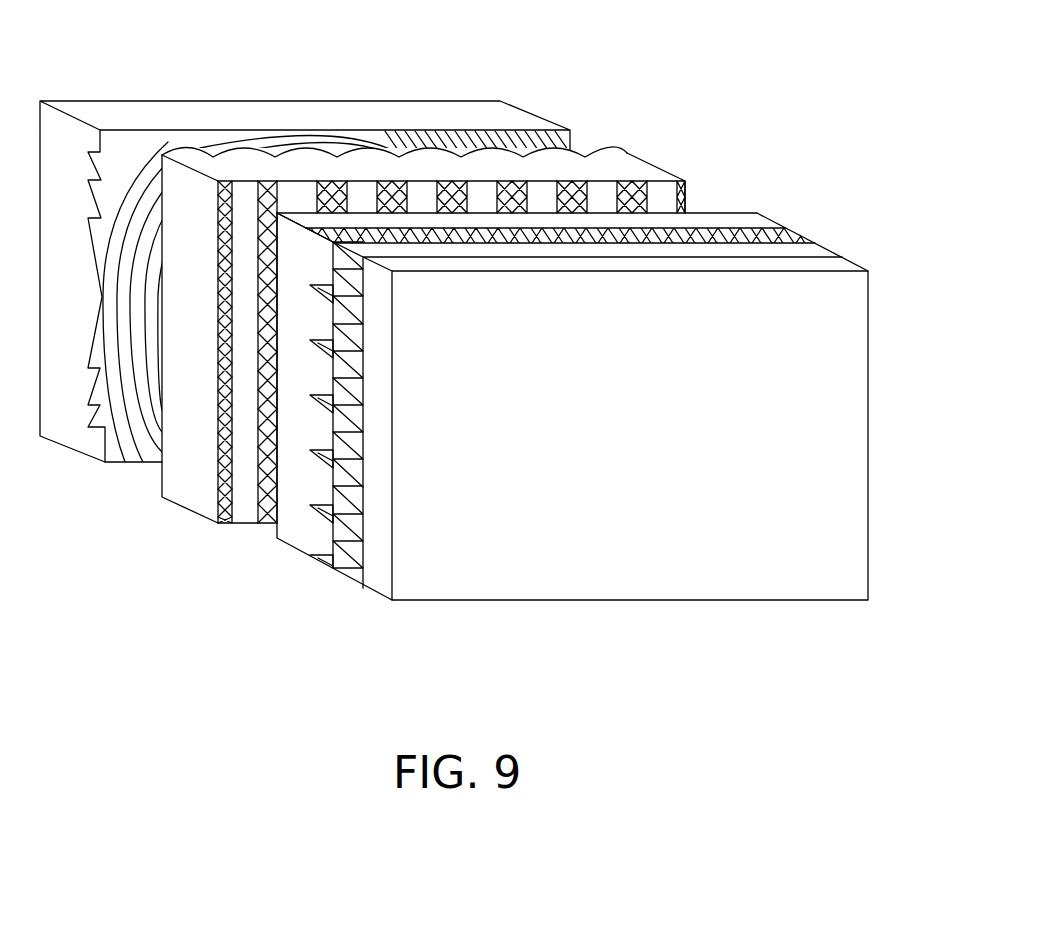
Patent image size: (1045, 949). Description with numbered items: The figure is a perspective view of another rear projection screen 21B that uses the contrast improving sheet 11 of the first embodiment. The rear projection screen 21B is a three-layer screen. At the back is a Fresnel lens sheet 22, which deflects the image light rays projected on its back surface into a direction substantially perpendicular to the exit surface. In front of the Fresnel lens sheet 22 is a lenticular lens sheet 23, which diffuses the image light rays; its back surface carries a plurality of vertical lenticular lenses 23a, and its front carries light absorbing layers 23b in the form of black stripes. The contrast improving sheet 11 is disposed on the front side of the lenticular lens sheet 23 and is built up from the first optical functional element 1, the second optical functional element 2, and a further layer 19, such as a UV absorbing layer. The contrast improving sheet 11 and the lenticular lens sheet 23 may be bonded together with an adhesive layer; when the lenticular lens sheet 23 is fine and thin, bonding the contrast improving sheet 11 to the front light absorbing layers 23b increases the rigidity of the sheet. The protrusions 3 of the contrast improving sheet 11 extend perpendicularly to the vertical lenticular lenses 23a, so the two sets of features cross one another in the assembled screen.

The rear projection screen 21B is at (928, 34).
The Fresnel lens sheet 22 is at (518, 116).
The lenticular lens sheet 23 is at (655, 167).
The vertical lenticular lenses 23a is at (590, 147).
The front light absorbing layers 23b is at (627, 187).
The protrusions 3 is at (320, 528).
The contrast improving sheet 11 is at (933, 198).
The first optical functional element 1 is at (786, 212).
The second optical functional element 2 is at (841, 242).
The layer 19 is at (872, 257).